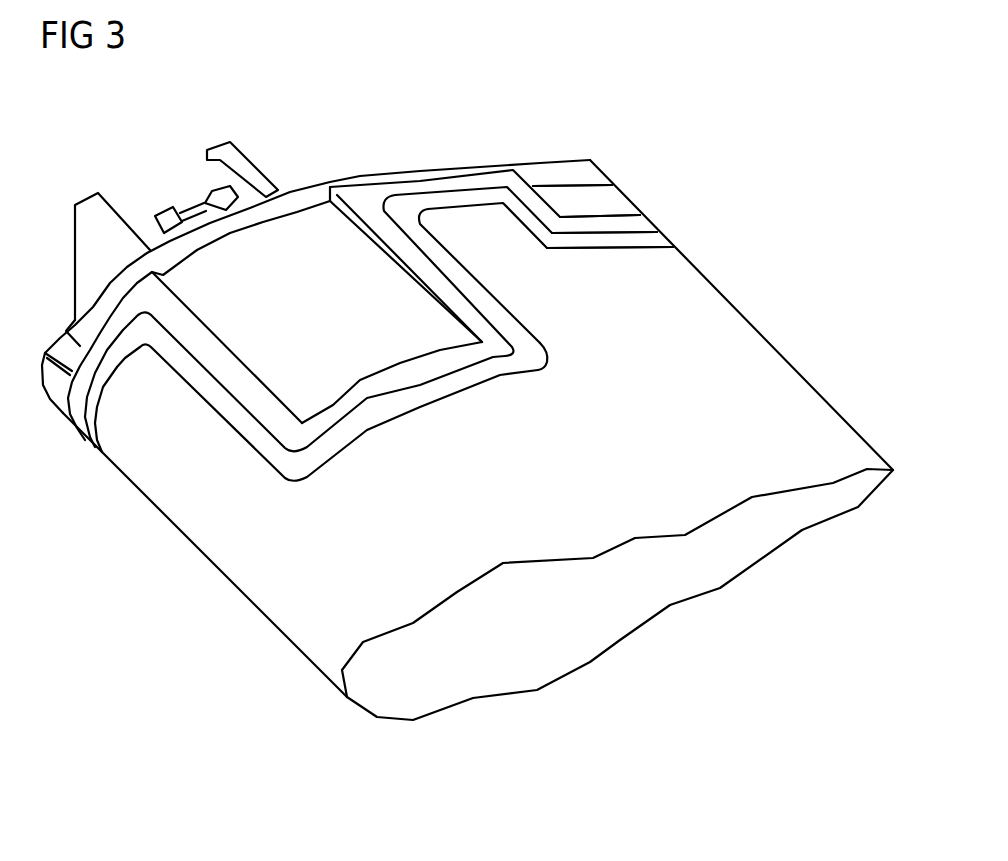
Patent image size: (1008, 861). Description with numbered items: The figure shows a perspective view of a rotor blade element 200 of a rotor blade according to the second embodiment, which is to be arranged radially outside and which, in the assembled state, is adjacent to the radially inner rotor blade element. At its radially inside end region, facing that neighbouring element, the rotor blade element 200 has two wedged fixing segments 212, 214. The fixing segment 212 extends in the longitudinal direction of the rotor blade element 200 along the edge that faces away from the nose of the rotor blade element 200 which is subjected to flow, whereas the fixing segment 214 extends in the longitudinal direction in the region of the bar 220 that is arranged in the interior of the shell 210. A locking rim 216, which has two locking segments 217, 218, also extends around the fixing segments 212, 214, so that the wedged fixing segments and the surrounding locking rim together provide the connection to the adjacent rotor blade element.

The rotor blade element 200 is at (212, 640).
The shell 210 is at (334, 158).
The fixing segment 212 is at (608, 200).
The fixing segment 214 is at (332, 355).
The locking rim 216 is at (498, 392).
The locking segment 217 is at (490, 337).
The locking segment 218 is at (540, 353).
The bar 220 is at (147, 190).